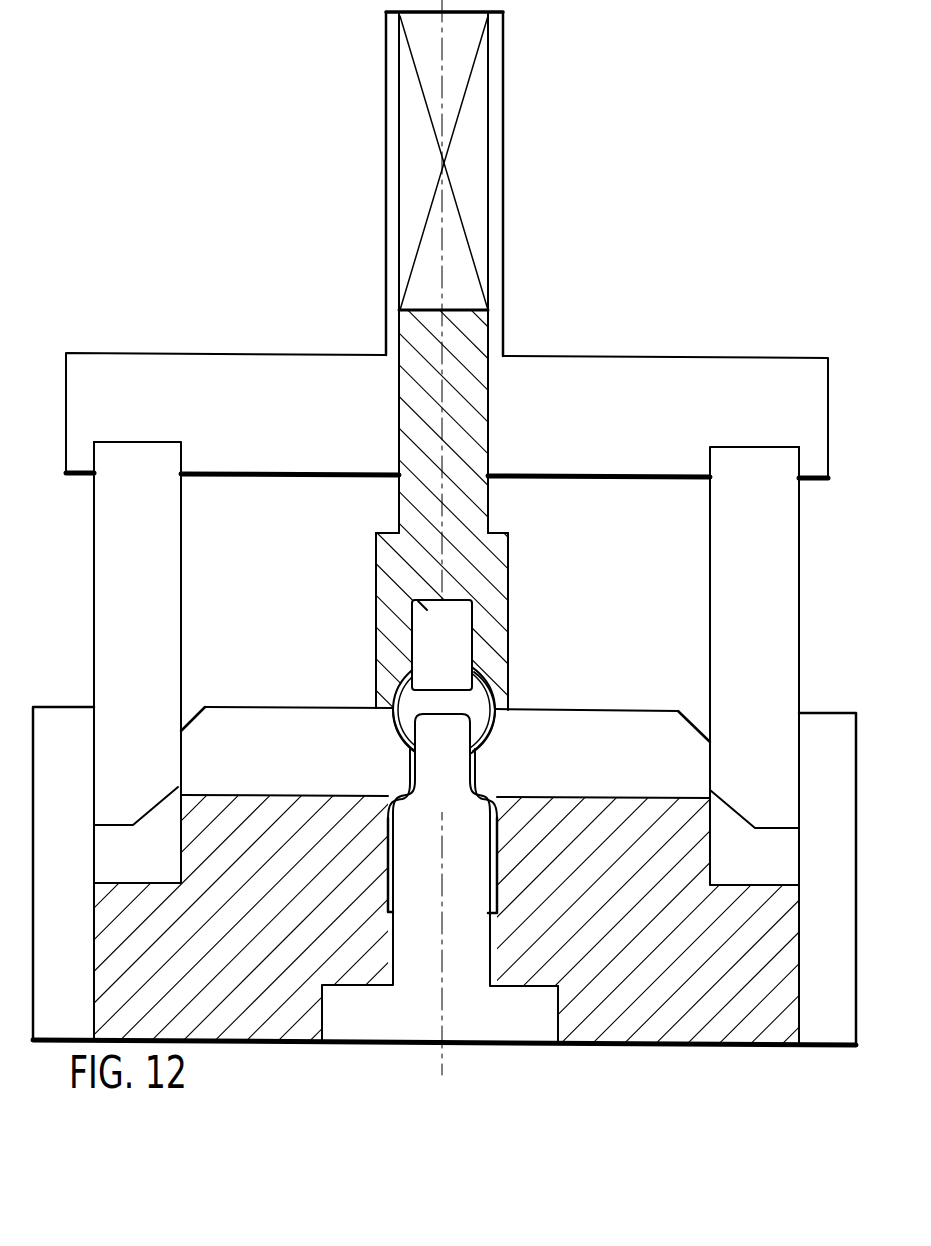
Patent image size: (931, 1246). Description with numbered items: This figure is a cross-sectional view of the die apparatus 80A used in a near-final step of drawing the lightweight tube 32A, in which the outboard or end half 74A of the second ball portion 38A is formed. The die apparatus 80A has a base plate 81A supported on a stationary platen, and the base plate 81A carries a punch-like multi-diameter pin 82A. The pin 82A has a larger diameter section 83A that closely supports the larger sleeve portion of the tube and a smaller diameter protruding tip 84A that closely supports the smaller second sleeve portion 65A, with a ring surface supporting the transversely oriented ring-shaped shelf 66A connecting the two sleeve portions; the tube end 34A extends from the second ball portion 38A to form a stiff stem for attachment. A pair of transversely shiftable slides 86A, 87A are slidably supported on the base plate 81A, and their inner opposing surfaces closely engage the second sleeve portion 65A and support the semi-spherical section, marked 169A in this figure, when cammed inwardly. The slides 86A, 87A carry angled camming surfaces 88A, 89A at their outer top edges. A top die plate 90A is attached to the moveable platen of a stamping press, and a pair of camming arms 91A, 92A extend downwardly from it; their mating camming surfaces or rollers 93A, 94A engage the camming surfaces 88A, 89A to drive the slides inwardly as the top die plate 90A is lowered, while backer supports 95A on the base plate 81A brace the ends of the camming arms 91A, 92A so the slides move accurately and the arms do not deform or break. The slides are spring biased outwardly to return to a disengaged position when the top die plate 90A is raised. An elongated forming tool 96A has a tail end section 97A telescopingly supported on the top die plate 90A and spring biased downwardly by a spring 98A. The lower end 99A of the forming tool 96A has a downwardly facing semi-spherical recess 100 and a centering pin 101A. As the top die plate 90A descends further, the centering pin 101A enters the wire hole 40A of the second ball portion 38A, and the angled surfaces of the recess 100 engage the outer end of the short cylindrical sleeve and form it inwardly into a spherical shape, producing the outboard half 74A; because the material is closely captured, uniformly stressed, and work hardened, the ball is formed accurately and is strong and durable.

The die apparatus 80A is at (714, 240).
The spring 98A is at (468, 162).
The tail end section 97A is at (398, 426).
The elongated forming tool 96A is at (496, 432).
The lower end 99A is at (514, 578).
The top die plate 90A is at (260, 353).
The camming arm 91A is at (94, 540).
The camming arm 92A is at (800, 552).
The mating camming surface or roller 93A is at (155, 812).
The mating camming surface or roller 94A is at (740, 815).
The backer supports 95A is at (55, 707).
The transversely shiftable slide 86A is at (265, 708).
The transversely shiftable slide 87A is at (645, 712).
The angled camming surface 88A is at (183, 727).
The angled camming surface 89A is at (693, 725).
The wire hole 40A is at (404, 668).
The outboard or end half of the second ball portion 74A is at (397, 680).
The lower seat surface 169A is at (392, 710).
The semi-spherically shaped recess 100 is at (478, 672).
The second ball portion 38A is at (499, 681).
The centering pin 101A is at (378, 533).
The smaller diameter protruding tip 84A is at (441, 763).
The second sleeve portion 65A is at (407, 773).
The ring-shaped shelf 66A is at (466, 818).
The larger diameter section 83A is at (442, 865).
The tube 32A is at (382, 864).
The tube end 34A is at (495, 875).
The multi-diameter pin 82A is at (467, 1043).
The base plate 81A is at (640, 1046).